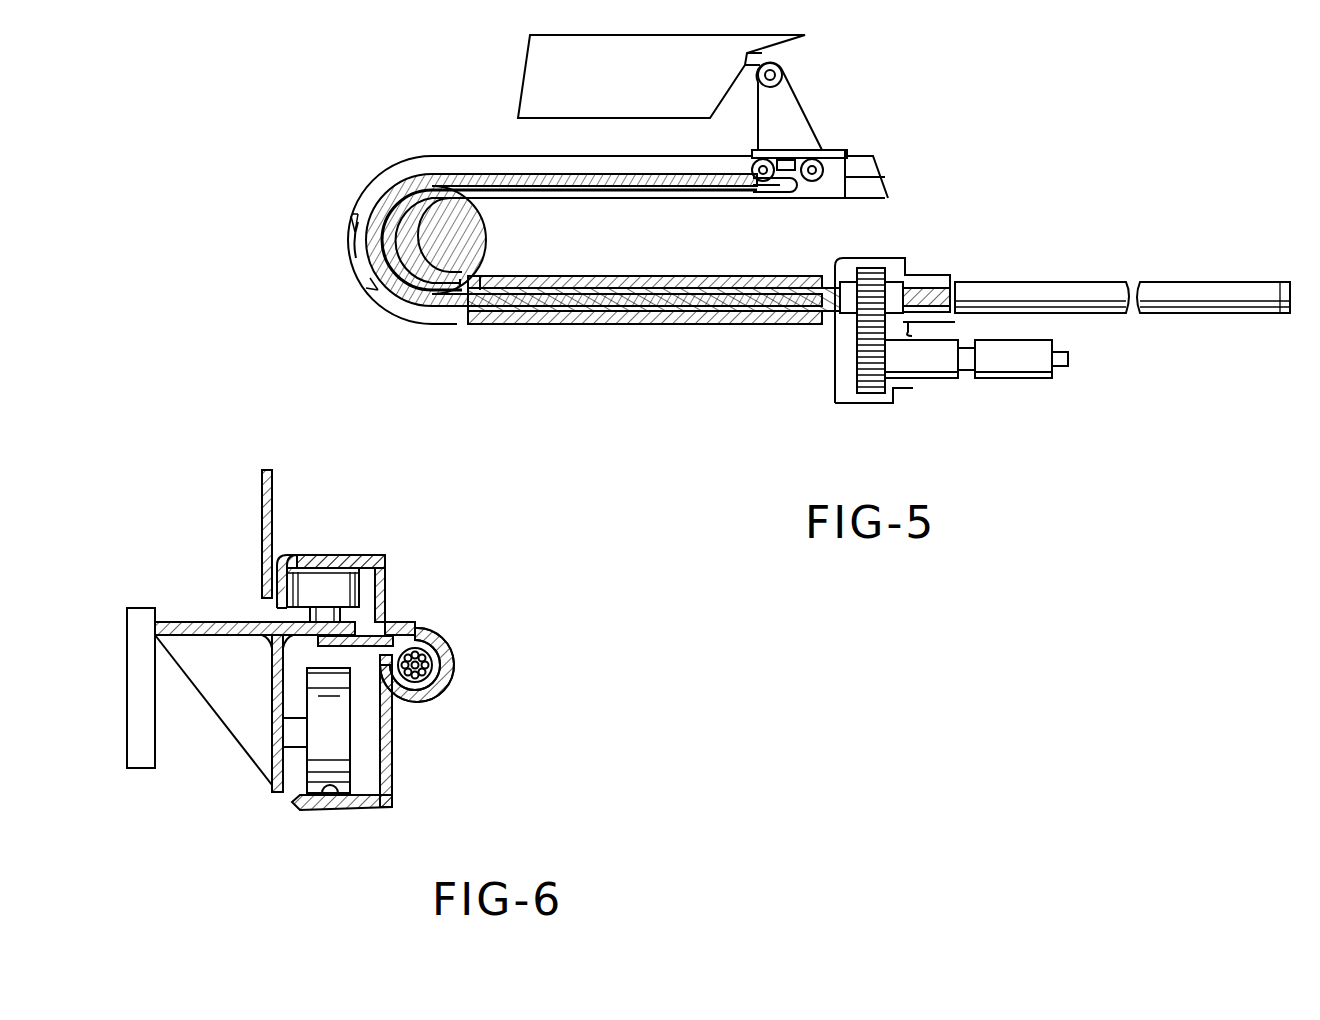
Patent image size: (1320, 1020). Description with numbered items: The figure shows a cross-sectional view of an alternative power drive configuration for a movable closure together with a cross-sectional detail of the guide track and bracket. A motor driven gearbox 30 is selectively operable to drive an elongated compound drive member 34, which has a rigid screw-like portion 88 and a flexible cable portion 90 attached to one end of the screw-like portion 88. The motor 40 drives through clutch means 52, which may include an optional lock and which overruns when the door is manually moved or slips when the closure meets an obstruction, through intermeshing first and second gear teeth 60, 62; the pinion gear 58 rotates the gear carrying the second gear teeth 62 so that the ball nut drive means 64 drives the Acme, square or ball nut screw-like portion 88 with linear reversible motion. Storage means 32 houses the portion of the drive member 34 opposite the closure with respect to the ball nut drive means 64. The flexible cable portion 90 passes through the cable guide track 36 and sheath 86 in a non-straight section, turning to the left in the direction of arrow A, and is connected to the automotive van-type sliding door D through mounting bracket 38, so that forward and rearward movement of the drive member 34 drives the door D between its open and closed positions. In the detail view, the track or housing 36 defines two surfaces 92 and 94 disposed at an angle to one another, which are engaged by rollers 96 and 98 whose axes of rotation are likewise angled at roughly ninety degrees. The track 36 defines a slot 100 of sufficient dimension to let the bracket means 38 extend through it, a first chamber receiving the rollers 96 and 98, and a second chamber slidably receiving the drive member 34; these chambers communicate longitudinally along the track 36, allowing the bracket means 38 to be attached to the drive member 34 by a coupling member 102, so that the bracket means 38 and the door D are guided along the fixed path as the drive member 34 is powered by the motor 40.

In FIG. 5, the motor driven gearbox 30 is at (835, 262).
In FIG. 5, the storage means 32 is at (1109, 264).
In FIG. 5, the compound drive member 34 is at (640, 280).
In FIG. 6, the compound drive member 34 is at (440, 660).
In FIG. 5, the cable guide track 36 is at (408, 160).
In FIG. 6, the cable guide track 36 is at (385, 555).
In FIG. 5, the mounting bracket 38 is at (808, 100).
In FIG. 6, the mounting bracket 38 is at (192, 622).
In FIG. 5, the motor 40 is at (1040, 388).
In FIG. 5, the clutch means 52 is at (953, 374).
In FIG. 5, the pinion gear 58 is at (856, 369).
In FIG. 5, the first gear teeth 60 is at (870, 385).
In FIG. 5, the second gear teeth 62 is at (876, 270).
In FIG. 5, the ball nut drive means 64 is at (898, 273).
In FIG. 5, the sheath 86 is at (577, 325).
In FIG. 5, the rigid screw-like portion 88 is at (488, 280).
In FIG. 5, the flexible cable portion 90 is at (372, 213).
In FIG. 6, the first track surface 92 is at (298, 585).
In FIG. 6, the second track surface 94 is at (335, 793).
In FIG. 6, the first roller 96 is at (325, 586).
In FIG. 6, the second roller 98 is at (340, 745).
In FIG. 6, the slot 100 is at (265, 610).
In FIG. 6, the coupling member 102 is at (362, 636).
In FIG. 5, the arrow A is at (352, 256).
In FIG. 5, the sliding door D is at (545, 60).
In FIG. 6, the sliding door D is at (126, 700).